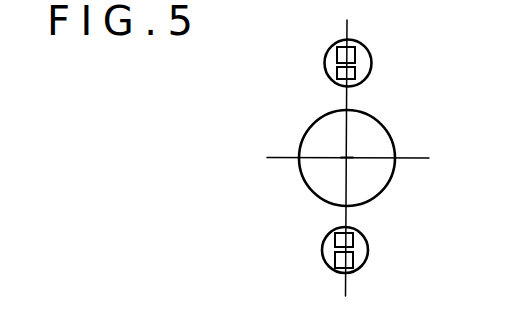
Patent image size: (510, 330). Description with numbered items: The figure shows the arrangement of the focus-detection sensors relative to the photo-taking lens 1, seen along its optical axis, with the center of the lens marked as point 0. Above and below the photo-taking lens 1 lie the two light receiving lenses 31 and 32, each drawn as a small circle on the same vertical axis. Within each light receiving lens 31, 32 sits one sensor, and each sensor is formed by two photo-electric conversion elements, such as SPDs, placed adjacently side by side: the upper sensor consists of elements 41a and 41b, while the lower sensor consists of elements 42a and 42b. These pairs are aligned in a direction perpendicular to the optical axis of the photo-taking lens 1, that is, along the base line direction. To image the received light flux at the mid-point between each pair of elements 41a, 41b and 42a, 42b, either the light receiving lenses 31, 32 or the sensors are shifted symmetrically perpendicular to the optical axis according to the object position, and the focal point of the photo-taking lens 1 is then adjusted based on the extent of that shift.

The photo-taking lens 1 is at (380, 184).
The center of the body 0 is at (349, 157).
The light receiving lens 31 is at (329, 60).
The photo-electric conversion element 41a is at (357, 53).
The photo-electric conversion element 41b is at (357, 76).
The light receiving lens 32 is at (328, 263).
The photo-electric conversion element 42a is at (350, 258).
The photo-electric conversion element 42b is at (353, 238).